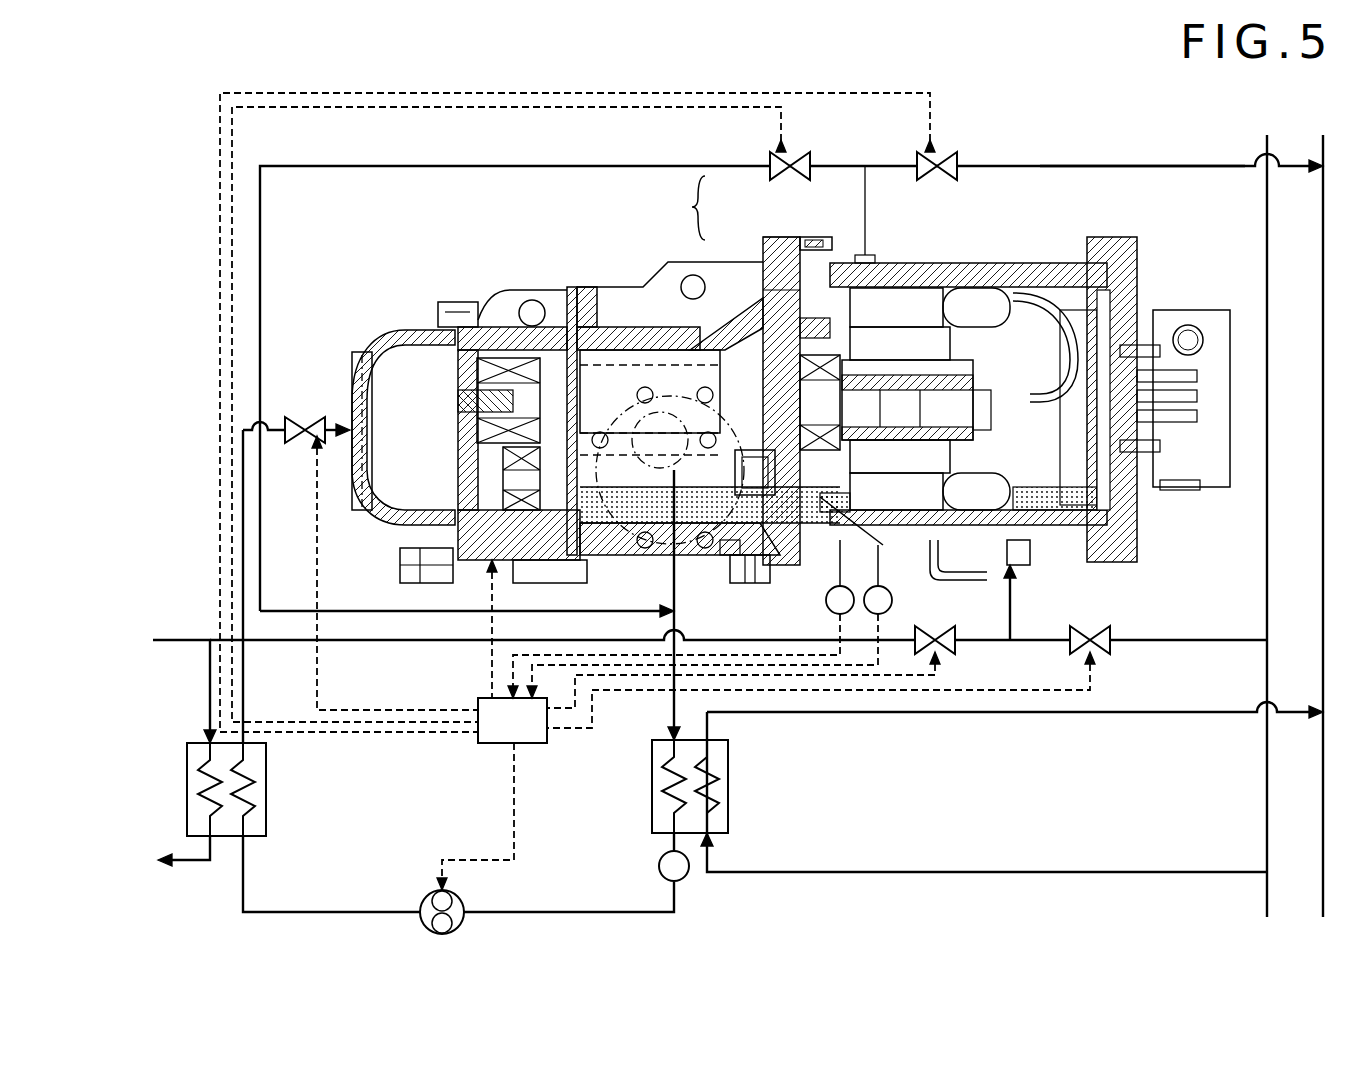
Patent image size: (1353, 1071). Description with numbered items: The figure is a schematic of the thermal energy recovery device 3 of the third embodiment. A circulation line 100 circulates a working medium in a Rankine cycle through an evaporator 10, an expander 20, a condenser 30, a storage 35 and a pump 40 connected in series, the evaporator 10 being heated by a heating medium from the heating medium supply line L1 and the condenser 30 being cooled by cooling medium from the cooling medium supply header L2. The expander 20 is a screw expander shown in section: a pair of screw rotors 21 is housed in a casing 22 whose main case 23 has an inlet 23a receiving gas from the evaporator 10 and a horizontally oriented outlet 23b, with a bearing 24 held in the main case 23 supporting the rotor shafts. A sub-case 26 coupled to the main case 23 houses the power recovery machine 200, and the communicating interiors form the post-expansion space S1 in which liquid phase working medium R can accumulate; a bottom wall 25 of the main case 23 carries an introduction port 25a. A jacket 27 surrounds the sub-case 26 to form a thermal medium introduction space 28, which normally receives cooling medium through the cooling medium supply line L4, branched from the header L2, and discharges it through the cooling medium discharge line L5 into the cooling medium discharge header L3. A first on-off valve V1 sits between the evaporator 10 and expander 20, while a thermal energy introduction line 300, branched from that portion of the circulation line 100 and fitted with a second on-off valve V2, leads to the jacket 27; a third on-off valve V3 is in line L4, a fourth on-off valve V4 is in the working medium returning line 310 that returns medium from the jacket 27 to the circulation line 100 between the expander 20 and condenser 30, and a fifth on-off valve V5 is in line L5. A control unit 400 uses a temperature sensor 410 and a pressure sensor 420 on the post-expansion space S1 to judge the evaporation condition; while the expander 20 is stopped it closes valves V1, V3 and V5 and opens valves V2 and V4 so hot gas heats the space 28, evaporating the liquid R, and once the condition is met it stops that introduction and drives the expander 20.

The thermal energy recovery device 3 is at (185, 172).
The evaporator 10 is at (268, 786).
The expander 20 is at (500, 290).
The screw rotors 21 is at (625, 370).
The casing 22 is at (752, 369).
The main case 23 is at (768, 248).
The inlet 23a is at (350, 405).
The outlet 23b is at (668, 400).
The bearing 24 is at (772, 352).
The bottom wall 25 is at (742, 560).
The introduction port 25a is at (728, 558).
The sub-case 26 is at (843, 250).
The jacket 27 is at (920, 258).
The thermal medium introduction space 28 is at (1030, 260).
The condenser 30 is at (732, 786).
The storage 35 is at (688, 874).
The pump 40 is at (462, 900).
The circulation line 100 is at (241, 464).
The power recovery machine 200 is at (970, 300).
The thermal energy introduction line 300 is at (538, 636).
The working medium returning line 310 is at (402, 168).
The control unit 400 is at (527, 745).
The temperature sensor 410 is at (895, 600).
The pressure sensor 420 is at (830, 610).
The liquid phase working medium R is at (688, 500).
The post-expansion space S1 is at (808, 490).
The first on-off valve V1 is at (300, 418).
The second on-off valve V2 is at (958, 652).
The third on-off valve V3 is at (1112, 652).
The fourth on-off valve V4 is at (812, 160).
The fifth on-off valve V5 is at (960, 160).
The heating medium supply line L1 is at (178, 644).
The cooling medium supply header L2 is at (1265, 806).
The cooling medium discharge header L3 is at (1321, 735).
The cooling medium supply line L4 is at (1168, 640).
The cooling medium discharge line L5 is at (1060, 166).